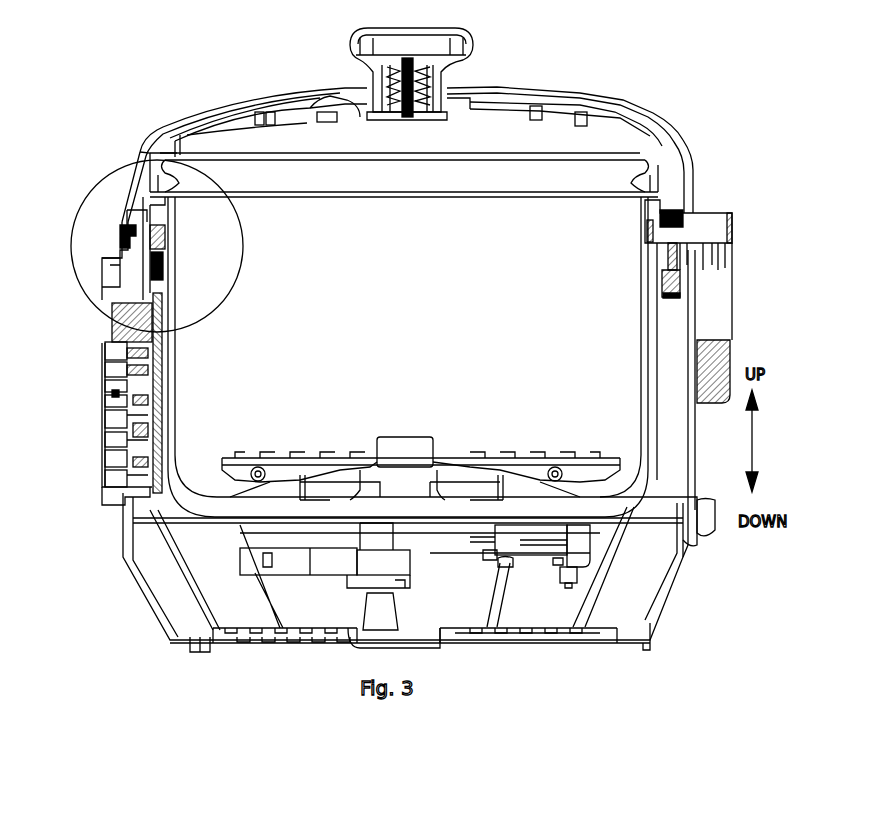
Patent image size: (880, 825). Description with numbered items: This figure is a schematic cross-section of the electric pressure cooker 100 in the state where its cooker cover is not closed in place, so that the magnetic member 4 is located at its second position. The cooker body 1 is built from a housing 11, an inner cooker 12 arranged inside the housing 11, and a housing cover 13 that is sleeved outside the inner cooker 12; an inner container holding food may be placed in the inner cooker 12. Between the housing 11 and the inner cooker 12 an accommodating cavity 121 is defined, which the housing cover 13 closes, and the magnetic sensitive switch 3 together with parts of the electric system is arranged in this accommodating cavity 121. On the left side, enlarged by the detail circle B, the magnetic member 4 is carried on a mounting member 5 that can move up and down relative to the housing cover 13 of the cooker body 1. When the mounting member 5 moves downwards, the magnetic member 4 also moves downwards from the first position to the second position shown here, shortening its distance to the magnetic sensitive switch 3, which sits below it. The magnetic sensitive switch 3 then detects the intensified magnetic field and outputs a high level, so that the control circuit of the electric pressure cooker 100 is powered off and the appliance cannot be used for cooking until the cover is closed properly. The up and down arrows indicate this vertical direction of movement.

The electric pressure cooker 100 is at (702, 99).
The accommodating cavity 121 is at (690, 382).
The cooker body 1 is at (44, 352).
The housing 11 is at (105, 425).
The inner cooker 12 is at (110, 393).
The housing cover 13 is at (123, 235).
The magnetic sensitive switch 3 is at (150, 313).
The magnetic member 4 is at (165, 268).
The mounting member 5 is at (162, 235).
The detail region B is at (100, 183).